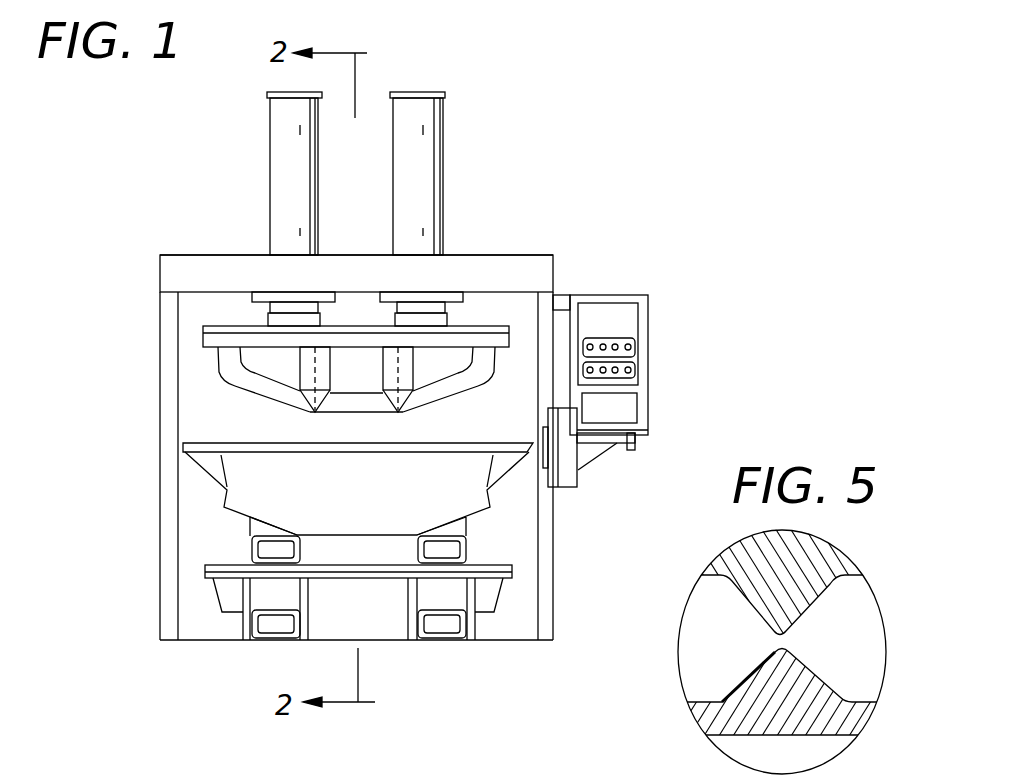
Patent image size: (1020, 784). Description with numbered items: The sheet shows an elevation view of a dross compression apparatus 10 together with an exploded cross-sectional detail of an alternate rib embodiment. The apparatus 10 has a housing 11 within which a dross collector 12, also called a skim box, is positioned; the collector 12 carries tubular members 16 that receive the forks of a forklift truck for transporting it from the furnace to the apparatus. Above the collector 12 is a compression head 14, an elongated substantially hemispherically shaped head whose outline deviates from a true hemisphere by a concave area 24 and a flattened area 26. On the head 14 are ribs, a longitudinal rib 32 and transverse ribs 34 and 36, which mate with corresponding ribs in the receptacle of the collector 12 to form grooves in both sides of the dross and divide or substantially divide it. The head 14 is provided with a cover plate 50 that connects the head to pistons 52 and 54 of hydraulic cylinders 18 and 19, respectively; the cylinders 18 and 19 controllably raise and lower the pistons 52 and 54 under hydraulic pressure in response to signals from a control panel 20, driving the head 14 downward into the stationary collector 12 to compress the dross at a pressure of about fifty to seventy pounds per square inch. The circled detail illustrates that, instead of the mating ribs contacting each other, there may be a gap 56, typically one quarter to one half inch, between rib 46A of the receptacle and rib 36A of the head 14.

In FIG. 1, the dross compression apparatus 10 is at (531, 248).
In FIG. 1, the housing 11 is at (555, 265).
In FIG. 1, the dross collector 12 is at (178, 438).
In FIG. 1, the compression head 14 is at (196, 330).
In FIG. 1, the tubular members 16 is at (253, 548).
In FIG. 1, the hydraulic cylinder 18 is at (269, 140).
In FIG. 1, the hydraulic cylinder 19 is at (443, 142).
In FIG. 1, the control panel 20 is at (648, 330).
In FIG. 1, the concave area 24 is at (475, 349).
In FIG. 1, the flattened area 26 is at (440, 378).
In FIG. 1, the longitudinal rib 32 is at (265, 398).
In FIG. 1, the transverse rib 34 is at (327, 367).
In FIG. 1, the transverse rib 36 is at (413, 365).
In FIG. 5, the rib of head 36A is at (753, 672).
In FIG. 5, the rib of receptacle 46A is at (747, 602).
In FIG. 1, the cover plate 50 is at (236, 325).
In FIG. 1, the piston 52 is at (320, 313).
In FIG. 1, the piston 54 is at (443, 313).
In FIG. 5, the gap 56 is at (802, 640).